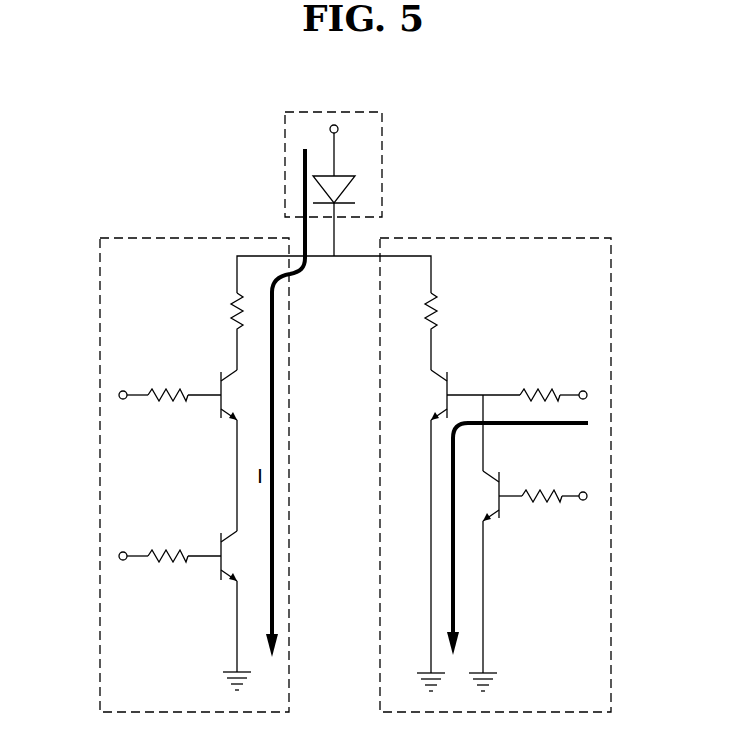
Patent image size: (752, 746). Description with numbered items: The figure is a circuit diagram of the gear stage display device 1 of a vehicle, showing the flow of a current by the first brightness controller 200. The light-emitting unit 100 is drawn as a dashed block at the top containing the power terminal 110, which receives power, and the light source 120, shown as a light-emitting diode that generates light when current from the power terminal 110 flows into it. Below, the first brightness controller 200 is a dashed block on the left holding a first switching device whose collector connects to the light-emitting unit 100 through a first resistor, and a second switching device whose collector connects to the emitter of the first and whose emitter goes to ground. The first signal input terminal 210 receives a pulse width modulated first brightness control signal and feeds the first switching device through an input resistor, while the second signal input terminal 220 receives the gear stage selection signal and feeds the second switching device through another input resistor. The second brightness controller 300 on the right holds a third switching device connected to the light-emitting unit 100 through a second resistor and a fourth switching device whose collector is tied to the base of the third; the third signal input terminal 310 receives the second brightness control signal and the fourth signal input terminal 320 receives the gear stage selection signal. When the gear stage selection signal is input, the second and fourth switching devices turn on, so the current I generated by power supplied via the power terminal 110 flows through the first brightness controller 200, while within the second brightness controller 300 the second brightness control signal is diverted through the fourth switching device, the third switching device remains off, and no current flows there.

The gear stage display device 1 is at (503, 108).
The light-emitting unit 100 is at (383, 163).
The power terminal 110 is at (330, 129).
The light source 120 is at (320, 187).
The first brightness controller 200 is at (163, 238).
The first signal input terminal 210 is at (119, 395).
The second signal input terminal 220 is at (119, 556).
The second brightness controller 300 is at (503, 238).
The third signal input terminal 310 is at (587, 395).
The fourth signal input terminal 320 is at (587, 496).